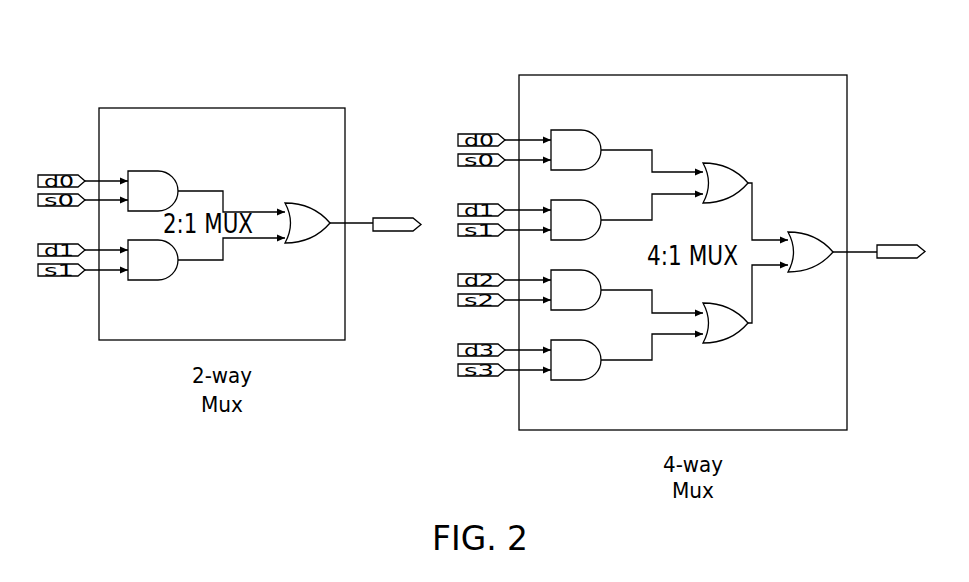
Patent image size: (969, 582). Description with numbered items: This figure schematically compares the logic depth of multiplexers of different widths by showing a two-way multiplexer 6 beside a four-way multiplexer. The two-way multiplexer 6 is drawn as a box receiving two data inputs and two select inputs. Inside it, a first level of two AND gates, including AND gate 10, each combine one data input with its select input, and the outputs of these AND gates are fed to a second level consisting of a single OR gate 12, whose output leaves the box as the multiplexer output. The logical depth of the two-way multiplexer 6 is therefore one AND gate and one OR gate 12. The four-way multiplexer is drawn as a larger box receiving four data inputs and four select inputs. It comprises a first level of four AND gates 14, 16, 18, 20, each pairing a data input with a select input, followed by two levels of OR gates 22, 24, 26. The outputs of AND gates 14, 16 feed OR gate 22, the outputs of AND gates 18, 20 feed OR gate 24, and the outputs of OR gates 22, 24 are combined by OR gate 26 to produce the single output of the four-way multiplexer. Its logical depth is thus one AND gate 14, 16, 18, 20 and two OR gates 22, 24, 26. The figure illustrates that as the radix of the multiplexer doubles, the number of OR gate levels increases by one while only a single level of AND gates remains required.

The two-way multiplexer 6 is at (228, 108).
The AND gate 10 is at (170, 277).
The OR gate 12 is at (297, 203).
The AND gate 14 is at (597, 133).
The AND gate 16 is at (585, 200).
The AND gate 18 is at (593, 270).
The AND gate 20 is at (594, 340).
The OR gate 22 is at (720, 163).
The OR gate 24 is at (738, 340).
The OR gate 26 is at (803, 232).